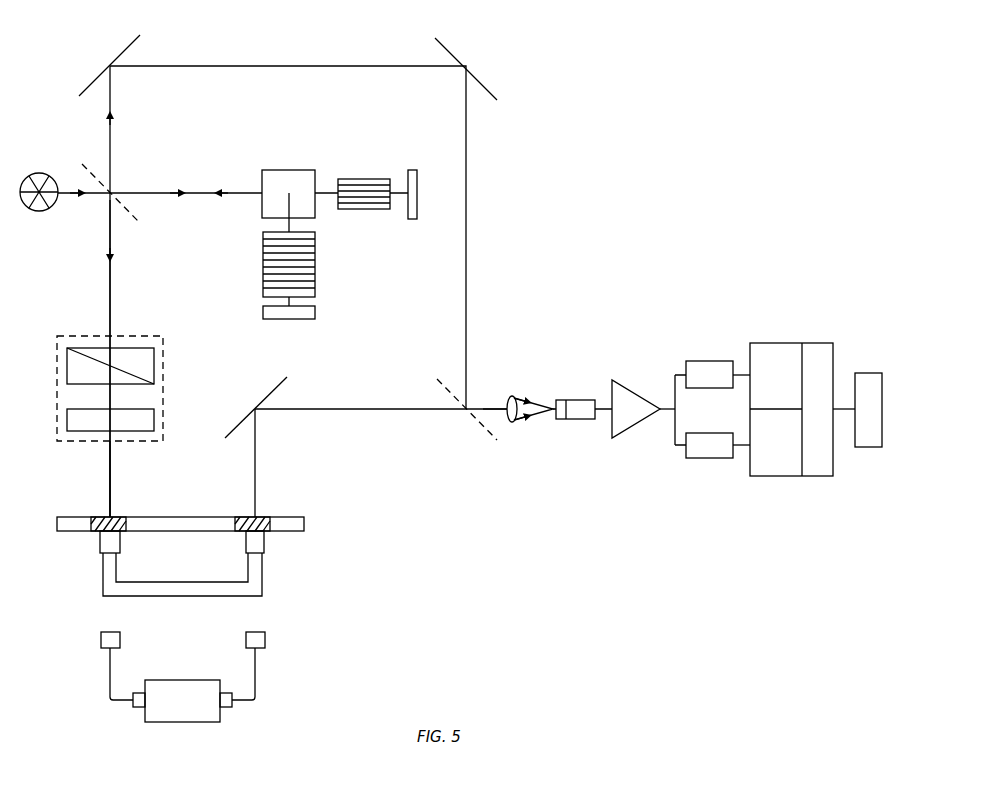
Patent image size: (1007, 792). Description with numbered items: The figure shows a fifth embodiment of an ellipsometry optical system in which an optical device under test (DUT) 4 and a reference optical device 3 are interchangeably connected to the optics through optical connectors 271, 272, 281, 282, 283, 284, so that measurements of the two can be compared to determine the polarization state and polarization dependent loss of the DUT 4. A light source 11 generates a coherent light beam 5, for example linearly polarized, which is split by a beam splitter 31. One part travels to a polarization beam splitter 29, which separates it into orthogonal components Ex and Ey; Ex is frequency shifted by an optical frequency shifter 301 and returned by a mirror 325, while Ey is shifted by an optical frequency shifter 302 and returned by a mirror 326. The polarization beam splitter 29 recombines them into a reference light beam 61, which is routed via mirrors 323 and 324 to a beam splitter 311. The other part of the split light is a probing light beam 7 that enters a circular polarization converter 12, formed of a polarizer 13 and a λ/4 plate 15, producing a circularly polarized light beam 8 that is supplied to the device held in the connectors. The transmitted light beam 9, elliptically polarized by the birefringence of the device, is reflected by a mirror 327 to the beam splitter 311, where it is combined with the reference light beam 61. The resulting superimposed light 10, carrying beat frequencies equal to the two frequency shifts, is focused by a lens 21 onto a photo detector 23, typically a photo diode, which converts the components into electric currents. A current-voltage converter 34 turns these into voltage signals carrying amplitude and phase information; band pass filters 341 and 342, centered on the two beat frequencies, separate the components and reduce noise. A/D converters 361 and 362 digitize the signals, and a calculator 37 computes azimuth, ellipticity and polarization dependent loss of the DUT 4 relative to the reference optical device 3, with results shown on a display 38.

The reference optical device 3 is at (168, 596).
The optical device under test (DUT) 4 is at (170, 722).
The coherent light beam 5 is at (97, 198).
The probing light beam 7 is at (110, 297).
The circularly polarized light beam 8 is at (110, 480).
The transmitted light beam 9 is at (418, 408).
The superimposed light 10 is at (483, 408).
The light source 11 is at (42, 178).
The circular polarization converter 12 is at (70, 338).
The polarizer 13 is at (155, 363).
The λ/4 plate 15 is at (155, 418).
The lens 21 is at (510, 424).
The photo detector 23 is at (563, 399).
The polarization beam splitter 29 is at (290, 170).
The beam splitter 31 is at (139, 222).
The current-voltage converter 34 is at (633, 438).
The calculator 37 is at (815, 343).
The display 38 is at (862, 373).
The reference light beam 61 is at (208, 70).
The optical connector 271 is at (100, 516).
The optical connector 272 is at (265, 516).
The optical connector 281 is at (106, 544).
The optical connector 282 is at (258, 544).
The optical connector 283 is at (104, 637).
The optical connector 284 is at (262, 637).
The optical frequency shifter 301 is at (372, 178).
The optical frequency shifter 302 is at (315, 256).
The beam splitter 311 is at (470, 437).
The mirror 323 is at (126, 46).
The mirror 324 is at (447, 46).
The mirror 325 is at (418, 186).
The mirror 326 is at (315, 312).
The mirror 327 is at (262, 396).
The band pass filter 341 is at (700, 361).
The band pass filter 342 is at (710, 458).
The A/D converter 361 is at (777, 343).
The A/D converter 362 is at (775, 476).